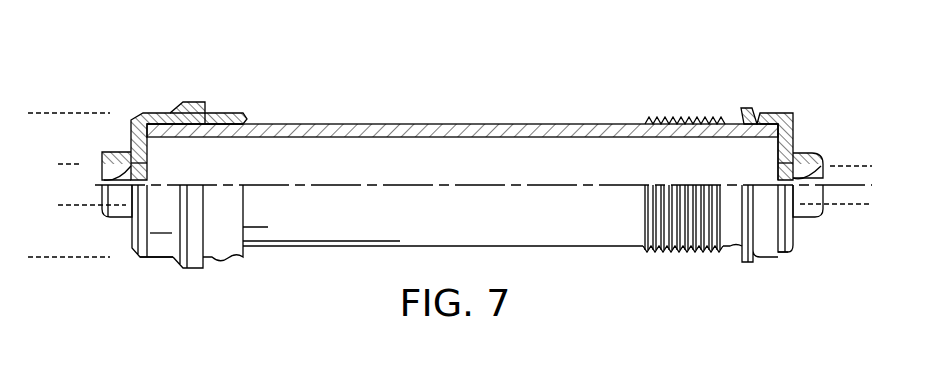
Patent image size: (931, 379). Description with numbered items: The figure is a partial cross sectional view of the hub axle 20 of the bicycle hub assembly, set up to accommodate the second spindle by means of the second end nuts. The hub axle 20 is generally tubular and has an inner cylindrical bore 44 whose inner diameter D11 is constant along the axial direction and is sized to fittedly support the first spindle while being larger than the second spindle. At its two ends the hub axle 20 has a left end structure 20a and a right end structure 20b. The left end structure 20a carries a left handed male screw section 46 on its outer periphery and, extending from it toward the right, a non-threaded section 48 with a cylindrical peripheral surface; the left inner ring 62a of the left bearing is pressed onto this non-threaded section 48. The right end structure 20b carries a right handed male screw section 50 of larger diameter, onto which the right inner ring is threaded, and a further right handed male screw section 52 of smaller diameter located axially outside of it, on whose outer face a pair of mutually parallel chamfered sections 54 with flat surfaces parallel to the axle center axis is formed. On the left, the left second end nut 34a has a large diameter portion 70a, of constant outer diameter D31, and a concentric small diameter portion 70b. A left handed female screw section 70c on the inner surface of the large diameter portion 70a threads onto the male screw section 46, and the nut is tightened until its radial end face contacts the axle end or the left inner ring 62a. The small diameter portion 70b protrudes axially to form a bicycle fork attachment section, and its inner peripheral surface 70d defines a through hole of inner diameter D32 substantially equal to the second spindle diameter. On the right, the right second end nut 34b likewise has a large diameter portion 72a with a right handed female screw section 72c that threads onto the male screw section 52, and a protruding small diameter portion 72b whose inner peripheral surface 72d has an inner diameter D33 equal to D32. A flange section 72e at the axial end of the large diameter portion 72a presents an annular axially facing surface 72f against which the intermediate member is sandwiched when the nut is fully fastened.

The hub axle 20 is at (462, 172).
The left end structure 20a is at (178, 179).
The right end structure 20b is at (710, 180).
The left second end nut 34a is at (154, 259).
The right second end nut 34b is at (792, 256).
The inner cylindrical bore 44 is at (306, 138).
The male screw section 46 is at (172, 112).
The non-threaded section 48 is at (220, 113).
The male screw section 50 is at (683, 254).
The male screw section 52 is at (749, 222).
The chamfered sections 54 is at (738, 125).
The left inner ring 62a is at (233, 259).
The large diameter portion 70a is at (150, 114).
The small diameter portion 70b is at (113, 218).
The female screw section 70c is at (186, 128).
The inner peripheral surface 70d is at (102, 168).
The large diameter portion 72a is at (773, 115).
The small diameter portion 72b is at (803, 153).
The female screw section 72c is at (773, 133).
The inner peripheral surface 72d is at (780, 168).
The flange section 72e is at (763, 112).
The axially facing surface 72f is at (743, 109).
The inner diameter D11 is at (162, 232).
The outer diameter D31 is at (36, 256).
The inner diameter D32 is at (68, 135).
The inner diameter D33 is at (863, 135).